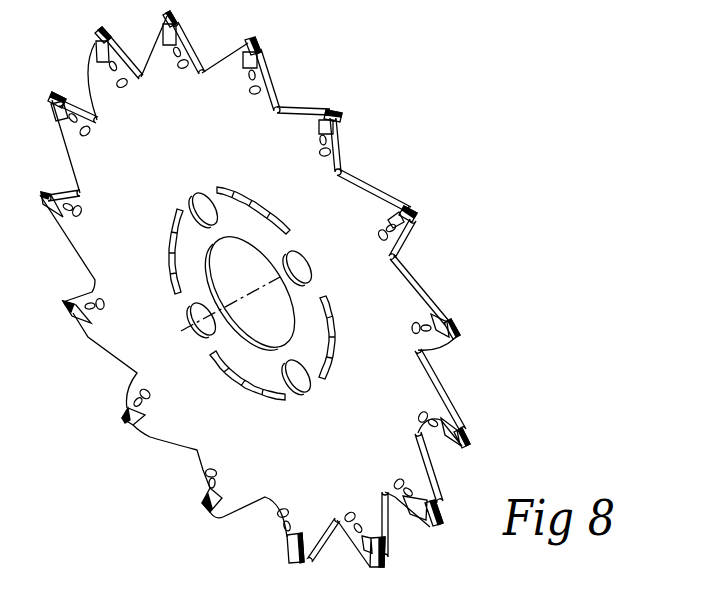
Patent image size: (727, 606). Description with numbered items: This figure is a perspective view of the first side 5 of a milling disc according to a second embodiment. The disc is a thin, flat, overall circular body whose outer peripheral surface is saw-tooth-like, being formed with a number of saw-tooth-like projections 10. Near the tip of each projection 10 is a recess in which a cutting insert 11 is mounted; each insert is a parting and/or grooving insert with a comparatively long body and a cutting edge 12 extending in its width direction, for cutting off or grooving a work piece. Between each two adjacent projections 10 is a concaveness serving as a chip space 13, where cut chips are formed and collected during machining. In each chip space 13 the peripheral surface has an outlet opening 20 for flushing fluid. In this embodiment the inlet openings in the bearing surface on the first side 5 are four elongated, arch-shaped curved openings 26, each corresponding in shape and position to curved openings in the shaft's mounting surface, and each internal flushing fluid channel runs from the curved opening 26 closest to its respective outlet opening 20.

The first side 5 is at (128, 322).
The saw-tooth-like projection 10 is at (378, 203).
The cutting insert 11 is at (435, 300).
The cutting edge 12 is at (450, 334).
The chip space 13 is at (418, 251).
The outlet opening 20 is at (356, 176).
The curved opening 26 is at (243, 387).